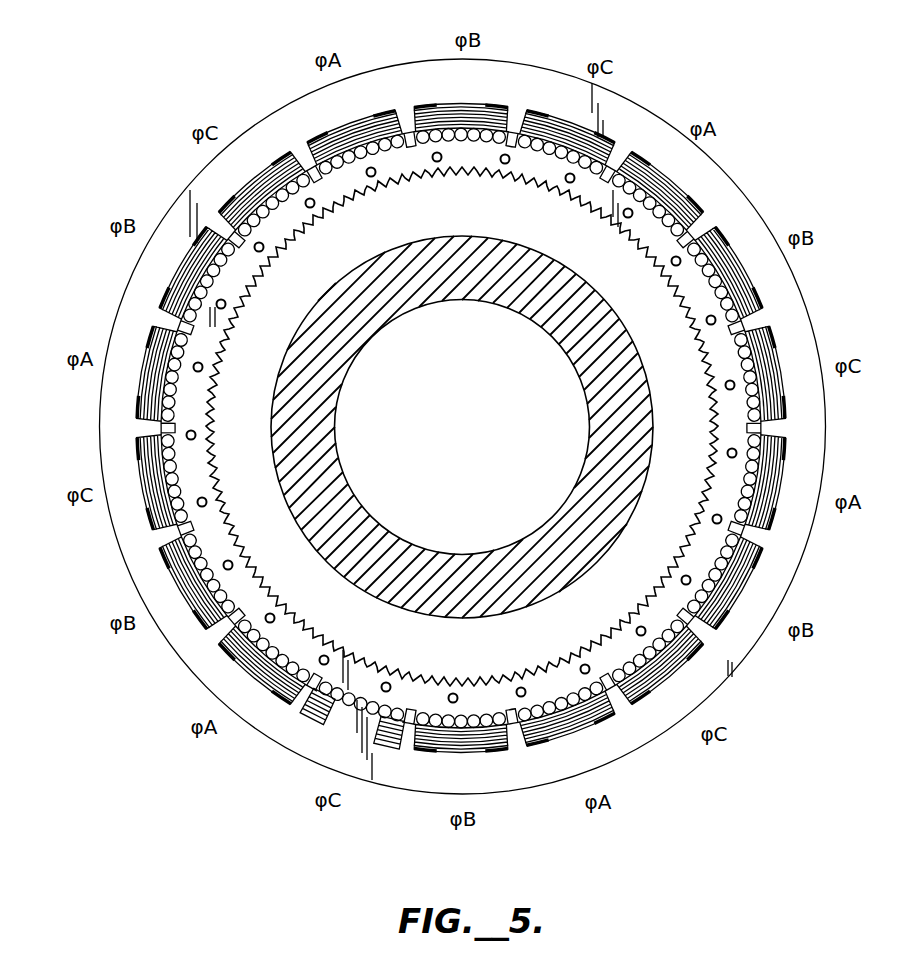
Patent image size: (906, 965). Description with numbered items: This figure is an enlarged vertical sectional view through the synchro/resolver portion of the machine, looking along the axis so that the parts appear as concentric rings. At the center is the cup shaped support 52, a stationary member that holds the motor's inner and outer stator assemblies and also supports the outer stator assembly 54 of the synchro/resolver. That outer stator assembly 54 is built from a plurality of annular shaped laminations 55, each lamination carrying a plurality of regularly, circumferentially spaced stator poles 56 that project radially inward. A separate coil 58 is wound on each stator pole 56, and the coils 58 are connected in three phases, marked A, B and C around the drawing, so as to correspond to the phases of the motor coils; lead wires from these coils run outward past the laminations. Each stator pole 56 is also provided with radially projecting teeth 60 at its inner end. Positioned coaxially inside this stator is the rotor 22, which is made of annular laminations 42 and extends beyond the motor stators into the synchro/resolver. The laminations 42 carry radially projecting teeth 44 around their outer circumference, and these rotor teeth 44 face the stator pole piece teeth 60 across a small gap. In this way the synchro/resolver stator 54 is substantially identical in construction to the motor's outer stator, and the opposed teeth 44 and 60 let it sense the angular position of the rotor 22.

The rotor 22 is at (452, 163).
The annular laminations 42 is at (262, 600).
The radially projecting teeth 44 is at (240, 607).
The cup shaped support 52 is at (578, 353).
The outer stator assembly 54 is at (535, 59).
The annular shaped laminations 55 is at (487, 72).
The stator poles 56 is at (359, 727).
The coil 58 is at (317, 713).
The radially projecting teeth 60 is at (410, 715).